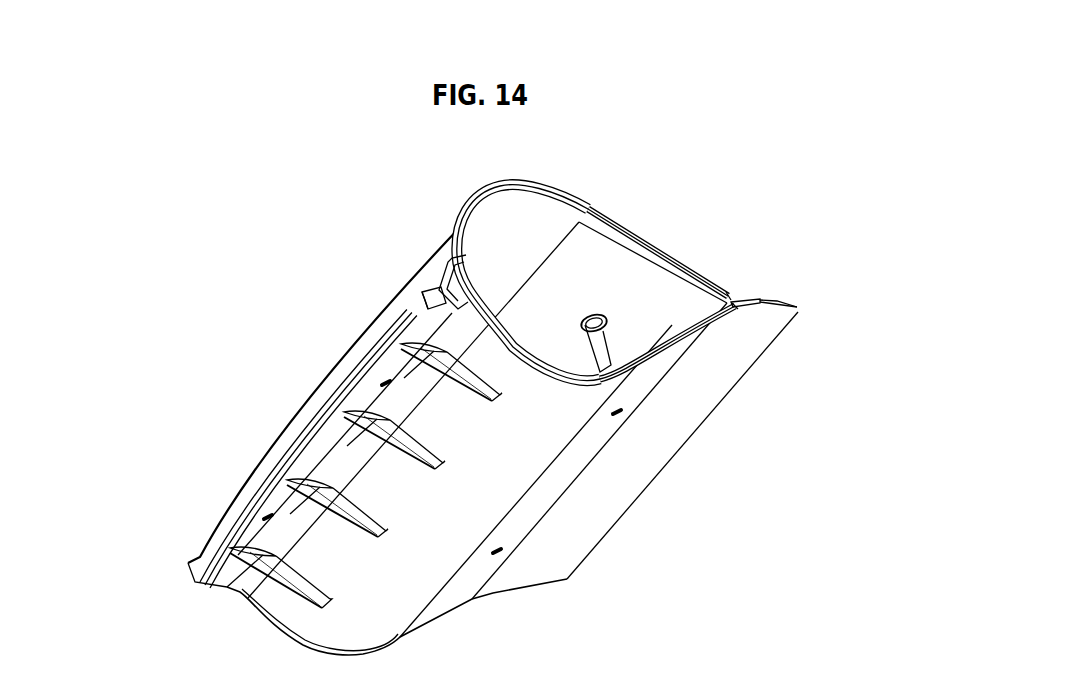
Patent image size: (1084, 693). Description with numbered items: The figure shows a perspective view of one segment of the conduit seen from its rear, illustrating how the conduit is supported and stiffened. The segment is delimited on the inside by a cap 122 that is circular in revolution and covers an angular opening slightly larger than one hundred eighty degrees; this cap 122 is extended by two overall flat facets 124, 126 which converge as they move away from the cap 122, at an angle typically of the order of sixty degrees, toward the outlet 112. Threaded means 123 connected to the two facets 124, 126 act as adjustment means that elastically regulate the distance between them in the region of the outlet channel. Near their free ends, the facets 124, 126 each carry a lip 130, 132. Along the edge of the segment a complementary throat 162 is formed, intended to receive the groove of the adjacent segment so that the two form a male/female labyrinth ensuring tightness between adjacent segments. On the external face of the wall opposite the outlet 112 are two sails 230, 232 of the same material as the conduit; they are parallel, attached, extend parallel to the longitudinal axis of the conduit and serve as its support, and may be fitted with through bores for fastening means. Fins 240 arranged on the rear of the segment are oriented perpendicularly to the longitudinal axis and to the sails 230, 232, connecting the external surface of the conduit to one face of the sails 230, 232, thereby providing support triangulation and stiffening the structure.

The outlet 112 is at (777, 300).
The cap 122 is at (473, 277).
The threaded means 123 is at (590, 352).
The facet 124 is at (662, 348).
The facet 126 is at (620, 238).
The lip 130 is at (755, 307).
The lip 132 is at (749, 299).
The complementary throat 162 is at (697, 277).
The sail 230 is at (423, 305).
The sail 232 is at (434, 297).
The fins 240 is at (440, 358).